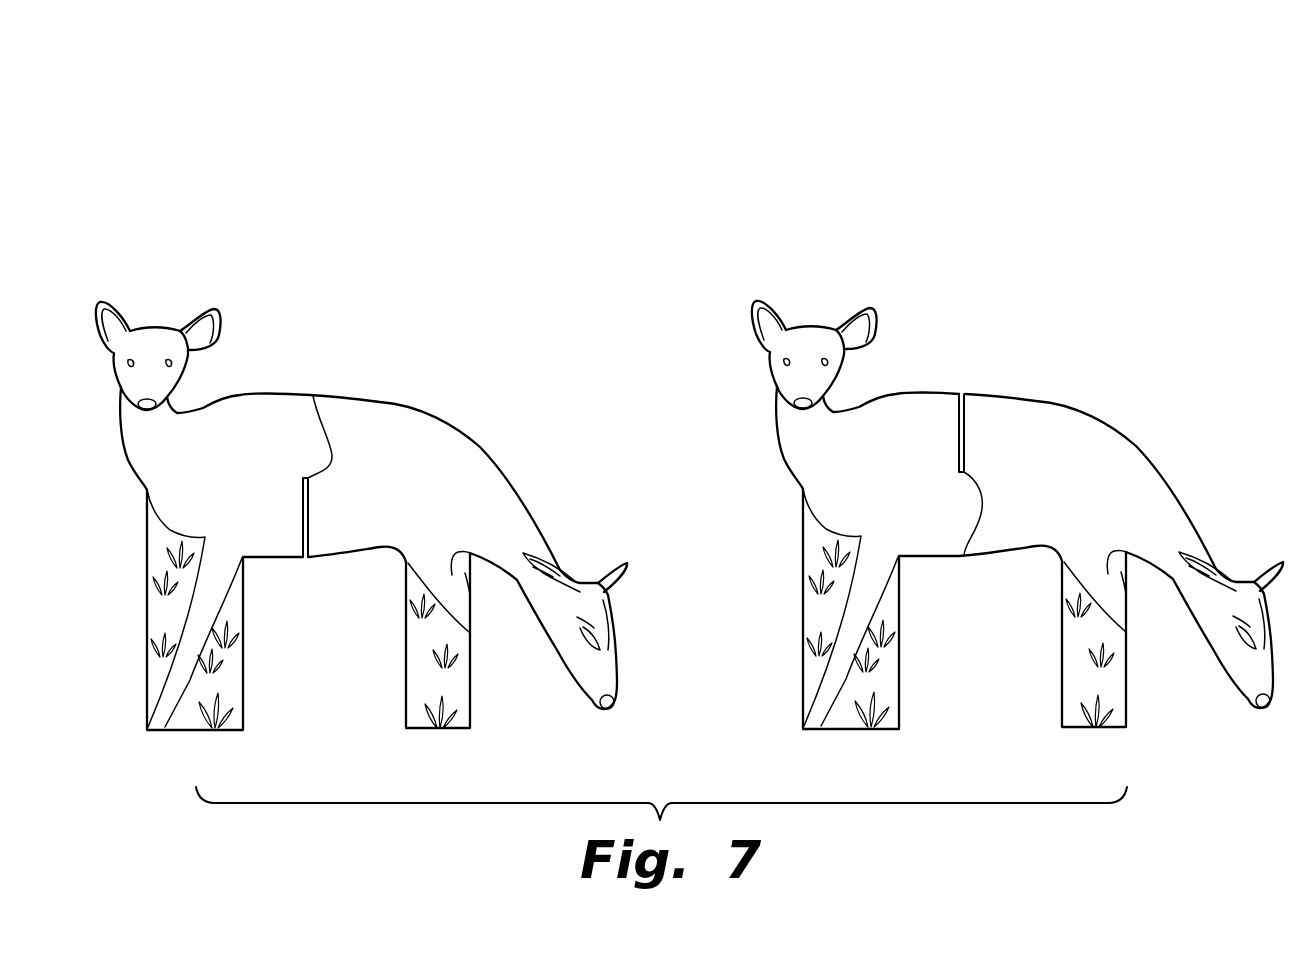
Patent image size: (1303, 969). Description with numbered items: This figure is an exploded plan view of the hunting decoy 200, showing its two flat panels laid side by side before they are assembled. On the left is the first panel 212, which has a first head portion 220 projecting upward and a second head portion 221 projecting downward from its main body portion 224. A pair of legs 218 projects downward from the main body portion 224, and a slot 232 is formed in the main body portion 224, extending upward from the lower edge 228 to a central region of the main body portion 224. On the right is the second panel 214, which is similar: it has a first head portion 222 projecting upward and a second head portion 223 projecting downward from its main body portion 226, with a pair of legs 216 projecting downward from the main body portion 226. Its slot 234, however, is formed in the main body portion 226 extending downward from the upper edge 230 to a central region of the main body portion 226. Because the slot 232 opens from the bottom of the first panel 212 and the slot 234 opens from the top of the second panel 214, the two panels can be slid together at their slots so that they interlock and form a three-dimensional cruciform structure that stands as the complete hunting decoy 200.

The hunting decoy 200 is at (130, 118).
The first panel 212 is at (101, 483).
The second panel 214 is at (1017, 480).
The pair of legs 216 is at (964, 608).
The pair of legs 218 is at (406, 687).
The first head portion 220 is at (151, 332).
The second head portion 221 is at (613, 627).
The first head portion 222 is at (814, 320).
The second head portion 223 is at (1227, 599).
The main body portion 224 is at (437, 457).
The main body portion 226 is at (1029, 544).
The lower edge 228 is at (347, 560).
The upper edge 230 is at (999, 385).
The slot 232 is at (313, 396).
The slot 234 is at (990, 548).